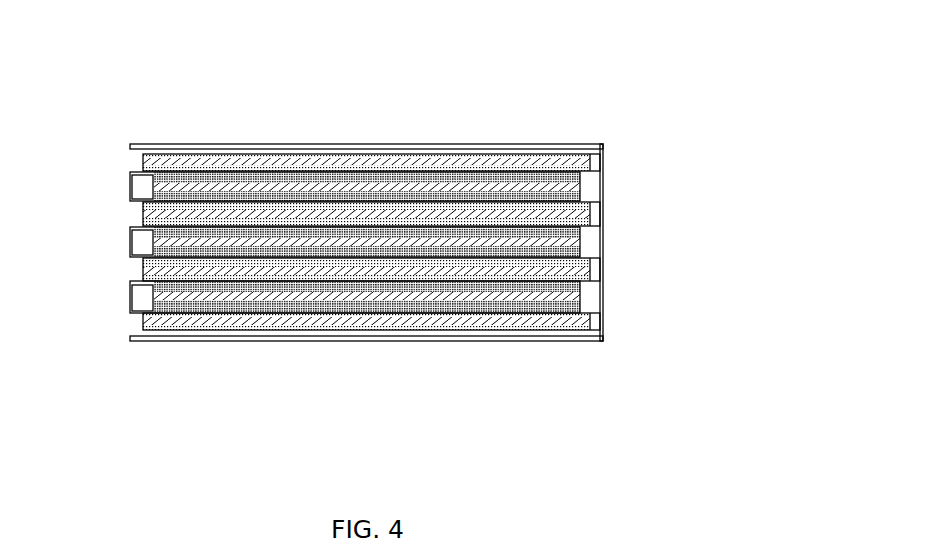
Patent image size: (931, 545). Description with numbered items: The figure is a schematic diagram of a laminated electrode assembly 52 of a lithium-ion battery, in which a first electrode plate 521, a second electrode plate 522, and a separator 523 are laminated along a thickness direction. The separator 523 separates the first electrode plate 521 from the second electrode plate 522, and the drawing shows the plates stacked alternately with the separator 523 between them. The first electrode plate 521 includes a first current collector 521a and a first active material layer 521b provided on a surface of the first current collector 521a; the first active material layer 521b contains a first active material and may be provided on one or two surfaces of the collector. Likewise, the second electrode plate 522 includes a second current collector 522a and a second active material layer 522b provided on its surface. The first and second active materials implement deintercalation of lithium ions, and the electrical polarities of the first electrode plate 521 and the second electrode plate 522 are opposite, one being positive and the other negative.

The electrode assembly 52 is at (354, 242).
The first electrode plate 521 is at (401, 179).
The first current collector 521a is at (396, 180).
The first active material layer 521b is at (382, 168).
The second electrode plate 522 is at (318, 200).
The second current collector 522a is at (197, 206).
The second active material layer 522b is at (185, 198).
The separator 523 is at (511, 334).